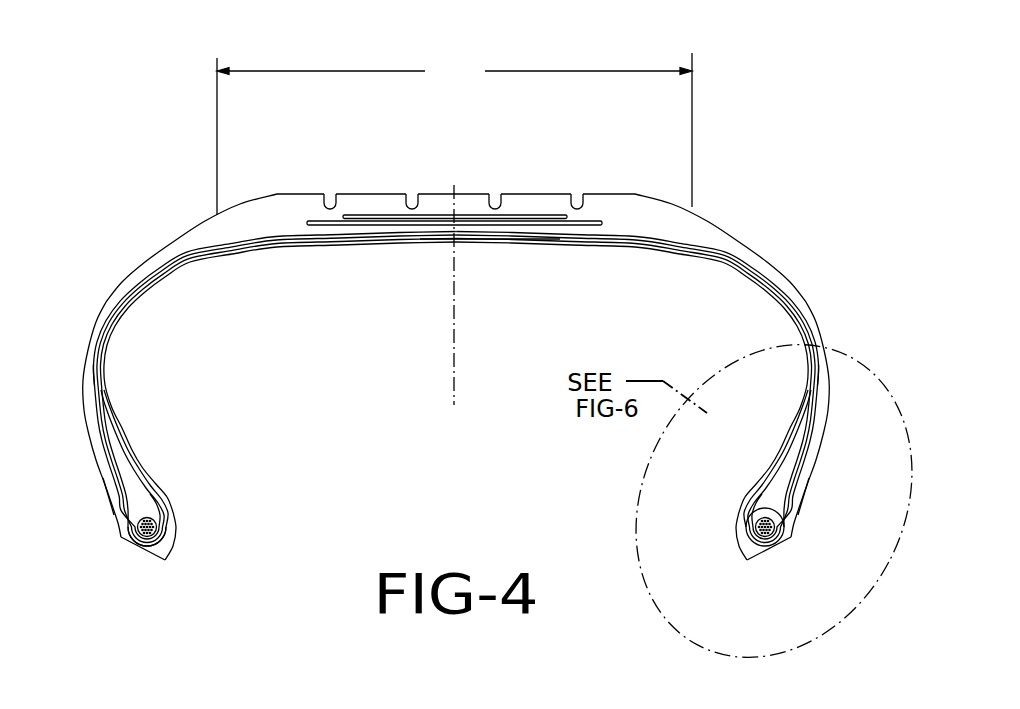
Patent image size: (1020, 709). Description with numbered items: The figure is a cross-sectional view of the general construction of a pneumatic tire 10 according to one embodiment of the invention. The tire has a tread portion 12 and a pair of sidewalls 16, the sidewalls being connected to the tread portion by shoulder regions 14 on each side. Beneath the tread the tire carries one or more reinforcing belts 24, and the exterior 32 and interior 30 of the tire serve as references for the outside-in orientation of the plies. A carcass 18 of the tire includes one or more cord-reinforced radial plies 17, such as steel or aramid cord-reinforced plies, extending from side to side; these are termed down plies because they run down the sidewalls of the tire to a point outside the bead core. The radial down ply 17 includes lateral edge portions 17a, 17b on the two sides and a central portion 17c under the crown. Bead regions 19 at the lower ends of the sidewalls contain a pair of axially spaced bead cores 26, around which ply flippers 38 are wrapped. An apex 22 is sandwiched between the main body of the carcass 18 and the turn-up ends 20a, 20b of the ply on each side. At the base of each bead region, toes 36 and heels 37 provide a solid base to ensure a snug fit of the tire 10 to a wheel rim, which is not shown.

The tire 10 is at (157, 110).
The tread portion 12 is at (428, 186).
The shoulder regions 14 is at (168, 236).
The sidewalls 16 is at (85, 327).
The cord-reinforced radial plies 17 is at (274, 228).
The lateral edge portion 17a is at (93, 379).
The lateral edge portion 17b is at (821, 374).
The central portion 17c is at (525, 229).
The carcass 18 is at (164, 295).
The bead regions 19 is at (186, 558).
The turn-up end 20a is at (126, 526).
The turn-up end 20b is at (790, 519).
The apex 22 is at (124, 459).
The reinforcing belts 24 is at (592, 216).
The bead cores 26 is at (150, 518).
The interior 30 is at (382, 277).
The exterior 32 is at (536, 175).
The toes 36 is at (150, 561).
The heels 37 is at (119, 540).
The ply flippers 38 is at (112, 484).